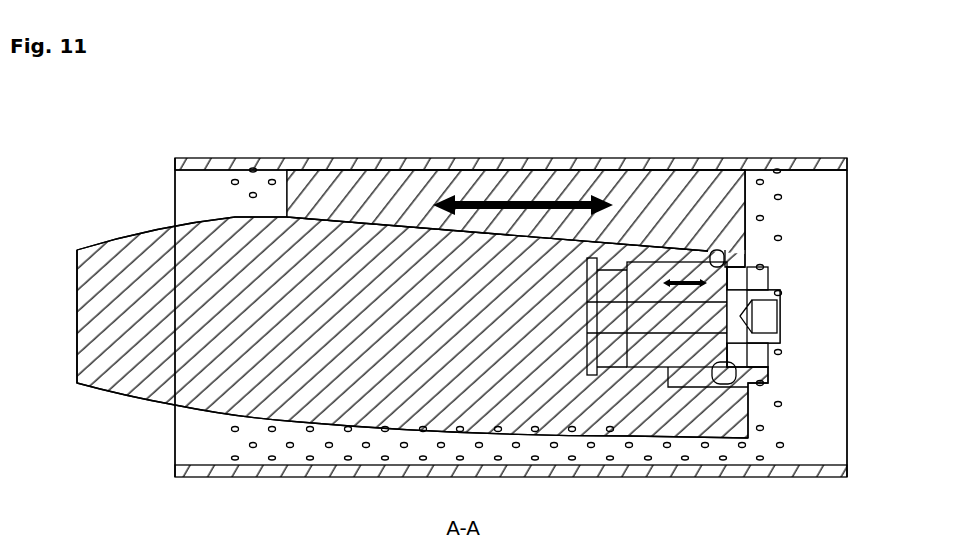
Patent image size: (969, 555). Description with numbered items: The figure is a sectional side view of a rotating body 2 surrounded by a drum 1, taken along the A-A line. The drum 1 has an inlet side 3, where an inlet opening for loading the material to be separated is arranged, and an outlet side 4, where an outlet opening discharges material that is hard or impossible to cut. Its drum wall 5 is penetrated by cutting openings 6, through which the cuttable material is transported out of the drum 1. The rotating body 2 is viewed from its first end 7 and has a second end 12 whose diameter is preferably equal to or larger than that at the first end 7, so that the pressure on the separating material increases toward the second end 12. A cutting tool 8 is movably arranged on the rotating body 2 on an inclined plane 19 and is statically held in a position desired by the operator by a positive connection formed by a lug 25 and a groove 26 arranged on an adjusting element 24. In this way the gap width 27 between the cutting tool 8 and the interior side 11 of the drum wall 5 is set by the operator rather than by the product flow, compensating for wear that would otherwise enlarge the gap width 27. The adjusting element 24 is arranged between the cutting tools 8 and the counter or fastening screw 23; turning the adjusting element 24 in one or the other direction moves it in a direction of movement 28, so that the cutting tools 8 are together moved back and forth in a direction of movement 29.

The drum 1 is at (698, 158).
The rotating body 2 is at (143, 245).
The inlet side 3 is at (175, 175).
The outlet side 4 is at (847, 188).
The drum wall 5 is at (340, 157).
The cutting openings 6 is at (253, 195).
The first end 7 is at (77, 308).
The cutting tool 8 is at (676, 190).
The interior side 11 is at (803, 168).
The second end 12 is at (747, 216).
The inclined plane 19 is at (392, 223).
The counter or fastening screw 23 is at (750, 324).
The adjusting element 24 is at (753, 352).
The lug 25 is at (747, 237).
The groove 26 is at (768, 281).
The gap width 27 is at (412, 170).
The direction of movement 28 is at (678, 283).
The direction of movement 29 is at (540, 202).